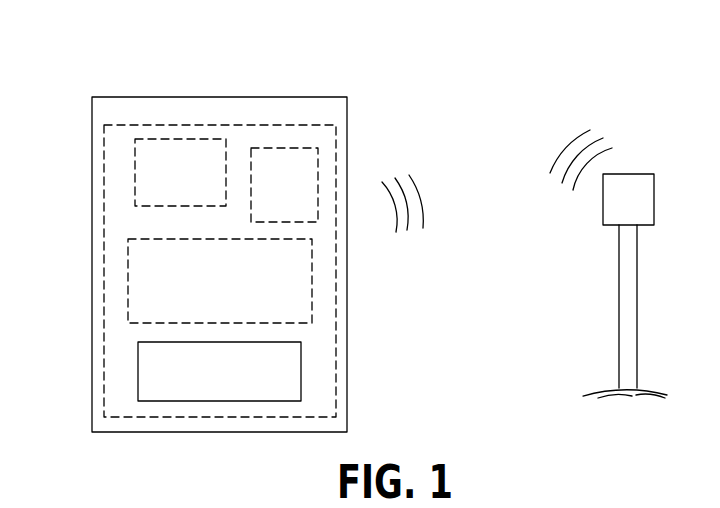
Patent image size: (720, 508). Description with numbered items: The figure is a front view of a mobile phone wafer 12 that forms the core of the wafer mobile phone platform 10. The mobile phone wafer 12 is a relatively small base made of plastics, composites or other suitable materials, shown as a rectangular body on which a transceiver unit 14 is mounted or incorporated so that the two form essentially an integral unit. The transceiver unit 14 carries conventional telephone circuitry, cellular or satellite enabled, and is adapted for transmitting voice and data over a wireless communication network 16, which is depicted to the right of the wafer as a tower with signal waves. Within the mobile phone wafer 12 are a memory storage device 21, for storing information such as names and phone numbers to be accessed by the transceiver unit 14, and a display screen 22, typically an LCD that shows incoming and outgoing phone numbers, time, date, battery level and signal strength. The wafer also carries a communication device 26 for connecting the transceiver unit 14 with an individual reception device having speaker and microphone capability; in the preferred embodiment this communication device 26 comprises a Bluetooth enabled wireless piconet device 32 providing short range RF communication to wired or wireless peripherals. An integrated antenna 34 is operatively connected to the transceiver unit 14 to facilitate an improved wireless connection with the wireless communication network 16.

The wafer mobile phone platform 10 is at (455, 95).
The mobile phone wafer 12 is at (122, 112).
The transceiver unit 14 is at (284, 271).
The wireless communication network 16 is at (600, 238).
The memory storage device 21 is at (305, 157).
The display screen 22 is at (280, 370).
The communication device 26 is at (167, 160).
The wireless piconet device 32 is at (147, 185).
The antenna 34 is at (104, 355).